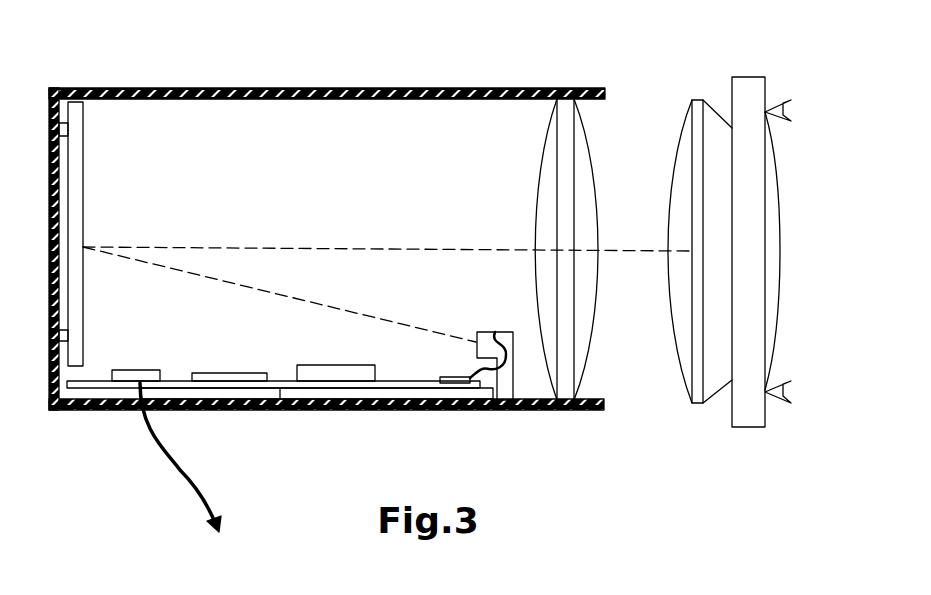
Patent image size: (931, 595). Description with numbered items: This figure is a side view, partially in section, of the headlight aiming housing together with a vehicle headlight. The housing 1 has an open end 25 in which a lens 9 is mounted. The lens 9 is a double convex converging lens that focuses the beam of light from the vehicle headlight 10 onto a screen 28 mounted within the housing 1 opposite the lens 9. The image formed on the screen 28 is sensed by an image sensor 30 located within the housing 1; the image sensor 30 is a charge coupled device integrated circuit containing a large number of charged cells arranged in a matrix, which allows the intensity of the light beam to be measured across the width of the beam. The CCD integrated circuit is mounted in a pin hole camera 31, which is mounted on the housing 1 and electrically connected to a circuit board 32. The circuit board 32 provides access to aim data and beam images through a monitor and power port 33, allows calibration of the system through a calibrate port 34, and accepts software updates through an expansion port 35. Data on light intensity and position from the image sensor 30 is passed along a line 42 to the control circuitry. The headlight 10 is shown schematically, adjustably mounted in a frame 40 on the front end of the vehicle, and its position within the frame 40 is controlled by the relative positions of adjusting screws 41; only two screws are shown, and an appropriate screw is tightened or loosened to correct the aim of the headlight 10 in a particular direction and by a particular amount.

The housing 1 is at (287, 90).
The lens 9 is at (596, 322).
The vehicle headlight 10 is at (675, 330).
The open end 25 is at (616, 125).
The screen 28 is at (83, 113).
The image sensor 30 is at (498, 337).
The pin hole camera 31 is at (513, 372).
The circuit board 32 is at (280, 392).
The monitor and power port 33 is at (147, 370).
The calibrate port 34 is at (238, 373).
The expansion port 35 is at (353, 365).
The frame 40 is at (751, 77).
The adjusting screws 41 is at (788, 102).
The line 42 is at (170, 462).